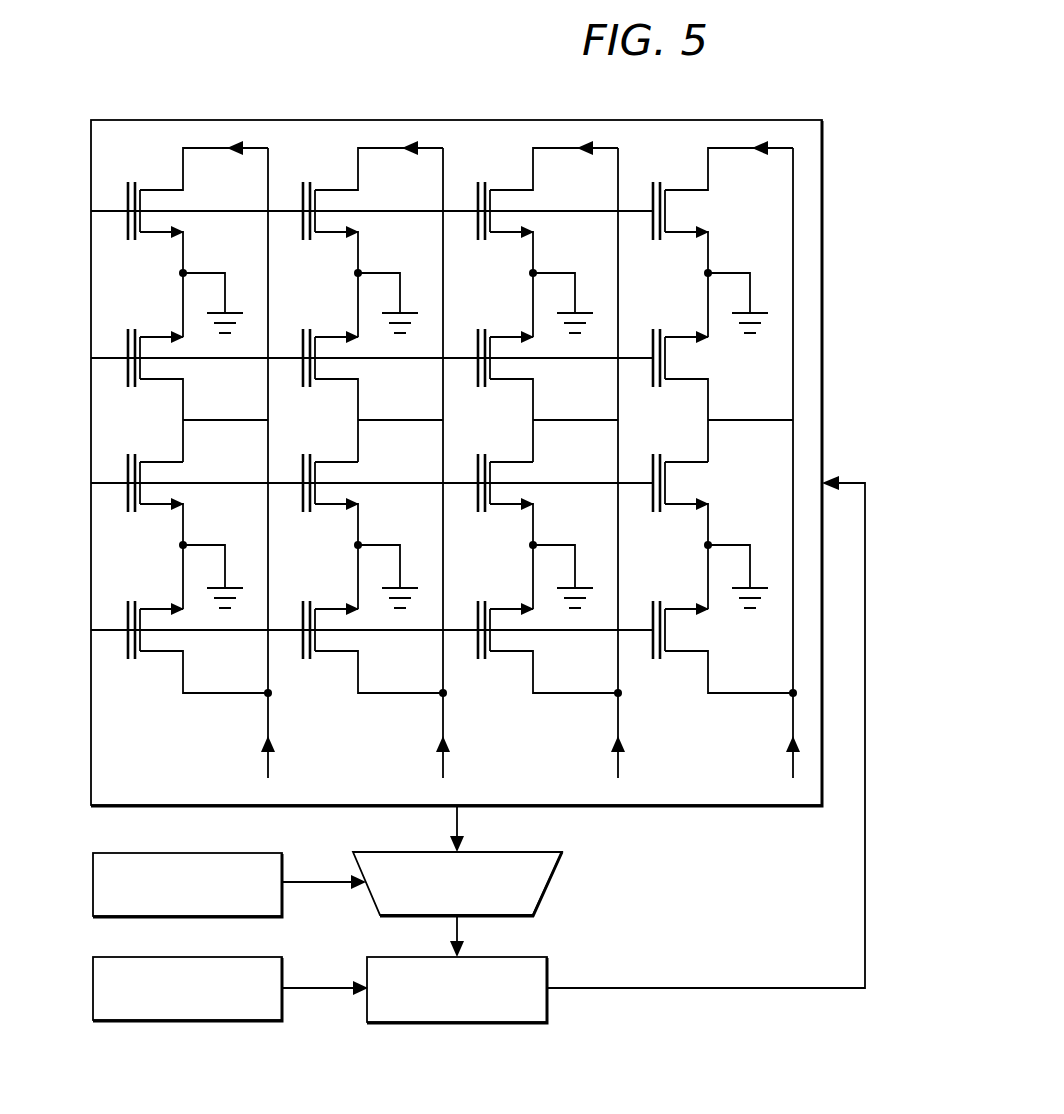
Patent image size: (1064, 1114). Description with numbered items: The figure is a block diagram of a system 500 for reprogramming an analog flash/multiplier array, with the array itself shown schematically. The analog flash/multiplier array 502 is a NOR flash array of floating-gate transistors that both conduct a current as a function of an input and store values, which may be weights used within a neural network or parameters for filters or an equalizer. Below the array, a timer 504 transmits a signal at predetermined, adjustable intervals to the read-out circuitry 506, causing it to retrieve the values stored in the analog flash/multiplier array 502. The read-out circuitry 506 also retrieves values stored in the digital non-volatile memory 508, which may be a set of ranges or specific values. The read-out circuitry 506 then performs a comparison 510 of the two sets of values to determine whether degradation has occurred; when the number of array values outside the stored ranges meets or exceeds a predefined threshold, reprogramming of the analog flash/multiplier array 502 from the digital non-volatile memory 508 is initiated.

The system 500 is at (226, 83).
The analog flash/multiplier array 502 is at (91, 157).
The timer 504 is at (93, 877).
The read-out circuitry 506 is at (540, 916).
The digital non-volatile memory 508 is at (93, 984).
The comparison 510 is at (548, 1006).